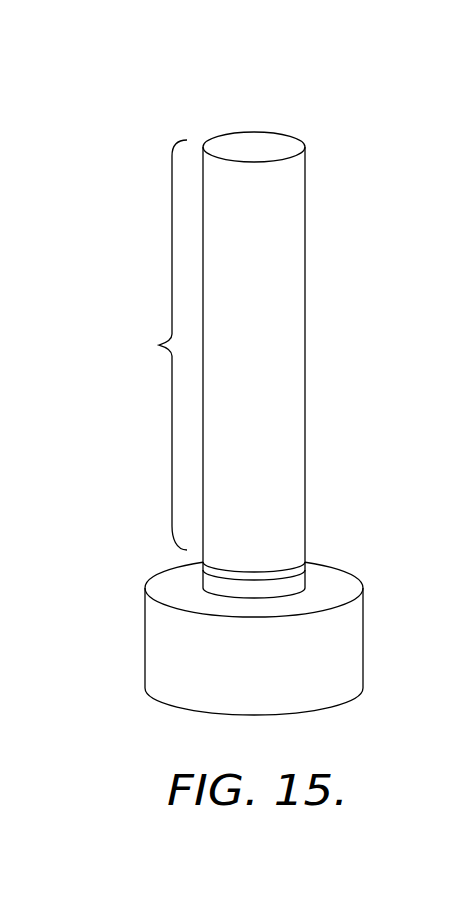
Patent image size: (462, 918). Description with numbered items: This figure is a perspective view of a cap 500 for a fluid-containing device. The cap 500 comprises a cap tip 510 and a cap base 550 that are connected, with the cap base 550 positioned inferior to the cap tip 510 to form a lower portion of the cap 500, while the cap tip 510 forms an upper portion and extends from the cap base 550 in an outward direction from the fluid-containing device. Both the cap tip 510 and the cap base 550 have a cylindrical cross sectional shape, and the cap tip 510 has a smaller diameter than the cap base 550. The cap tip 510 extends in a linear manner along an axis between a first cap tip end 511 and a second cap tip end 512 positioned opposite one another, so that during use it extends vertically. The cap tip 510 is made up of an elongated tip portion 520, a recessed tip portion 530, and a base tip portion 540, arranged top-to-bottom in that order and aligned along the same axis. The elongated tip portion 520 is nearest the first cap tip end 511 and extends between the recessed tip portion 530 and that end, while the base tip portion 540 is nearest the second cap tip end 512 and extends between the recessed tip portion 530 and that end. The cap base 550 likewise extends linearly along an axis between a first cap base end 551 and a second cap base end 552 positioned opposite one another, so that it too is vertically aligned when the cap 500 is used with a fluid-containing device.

The cap 500 is at (252, 408).
The cap tip 510 is at (279, 331).
The first cap tip end 511 is at (279, 134).
The second cap tip end 512 is at (196, 596).
The elongated tip portion 520 is at (113, 178).
The recessed tip portion 530 is at (306, 561).
The base tip portion 540 is at (315, 587).
The cap base 550 is at (263, 651).
The first cap base end 551 is at (282, 612).
The second cap base end 552 is at (304, 714).